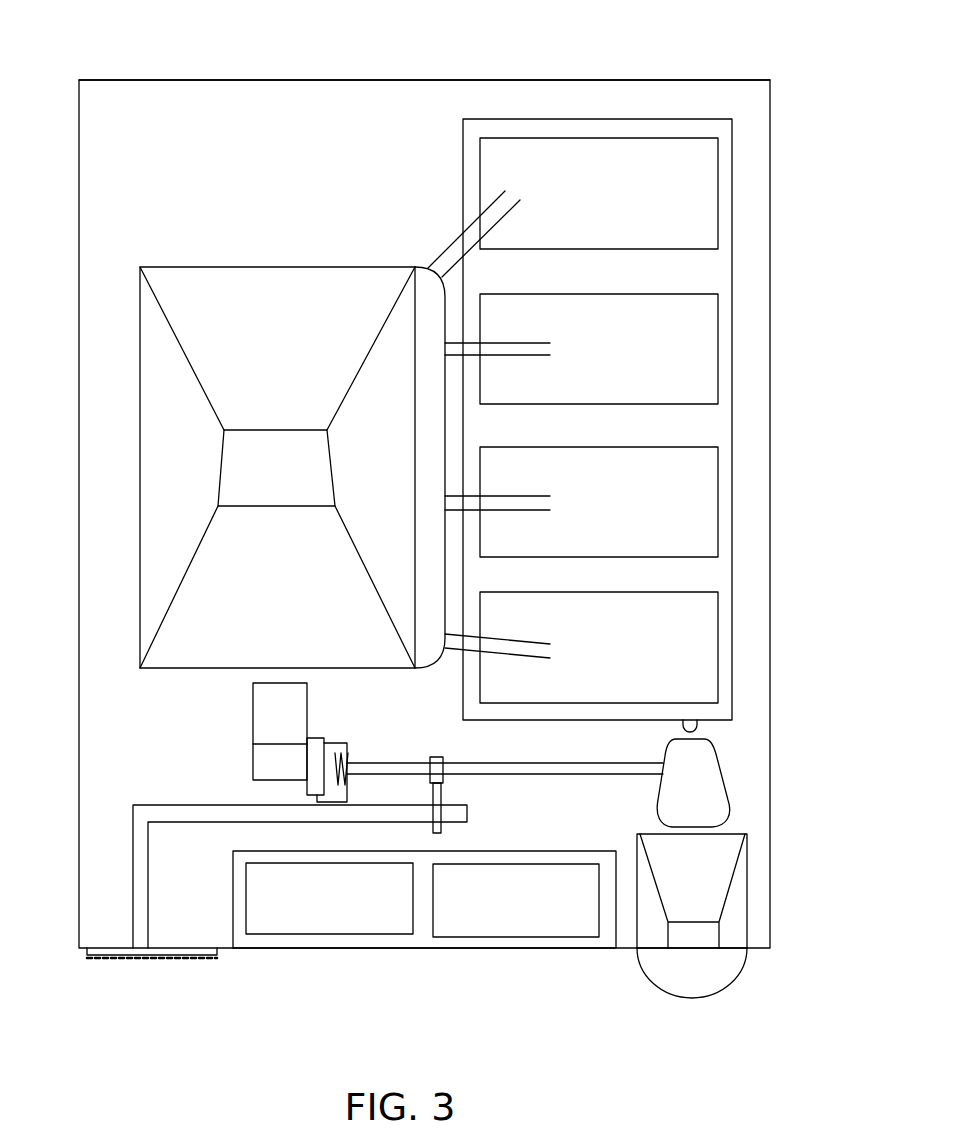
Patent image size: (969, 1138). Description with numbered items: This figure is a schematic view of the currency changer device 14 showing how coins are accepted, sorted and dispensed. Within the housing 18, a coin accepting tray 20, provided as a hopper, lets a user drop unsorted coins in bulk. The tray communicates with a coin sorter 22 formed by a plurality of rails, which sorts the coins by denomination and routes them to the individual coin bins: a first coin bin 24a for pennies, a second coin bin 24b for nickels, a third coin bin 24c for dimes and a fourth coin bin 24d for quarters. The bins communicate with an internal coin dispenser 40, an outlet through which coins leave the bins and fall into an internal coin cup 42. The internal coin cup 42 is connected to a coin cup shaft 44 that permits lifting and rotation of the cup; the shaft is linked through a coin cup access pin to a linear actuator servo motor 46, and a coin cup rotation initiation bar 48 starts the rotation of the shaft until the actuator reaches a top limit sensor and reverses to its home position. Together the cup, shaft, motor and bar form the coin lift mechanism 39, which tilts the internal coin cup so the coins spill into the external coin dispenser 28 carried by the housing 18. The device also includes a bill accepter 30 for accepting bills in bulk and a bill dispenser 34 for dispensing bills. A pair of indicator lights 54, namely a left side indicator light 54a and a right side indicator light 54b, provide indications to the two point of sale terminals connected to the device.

The currency changer device 14 is at (608, 70).
The housing 18 is at (485, 80).
The coin accepting tray 20 is at (227, 278).
The coin sorter 22 is at (436, 243).
The first coin bin 24a is at (580, 210).
The second coin bin 24b is at (579, 363).
The third coin bin 24c is at (579, 516).
The fourth coin bin 24d is at (579, 661).
The coin dispenser 28 is at (738, 973).
The bill accepter 30 is at (87, 952).
The bill dispenser 34 is at (115, 963).
The coin lift mechanism 39 is at (748, 761).
The internal coin dispenser 40 is at (697, 730).
The internal coin cup 42 is at (718, 808).
The coin cup shaft 44 is at (568, 762).
The linear actuator servo motor 46 is at (263, 728).
The coin cup rotation initiation bar 48 is at (142, 873).
The indicator light 54 is at (424, 934).
The left side indicator light 54a is at (322, 915).
The right side indicator light 54b is at (548, 930).